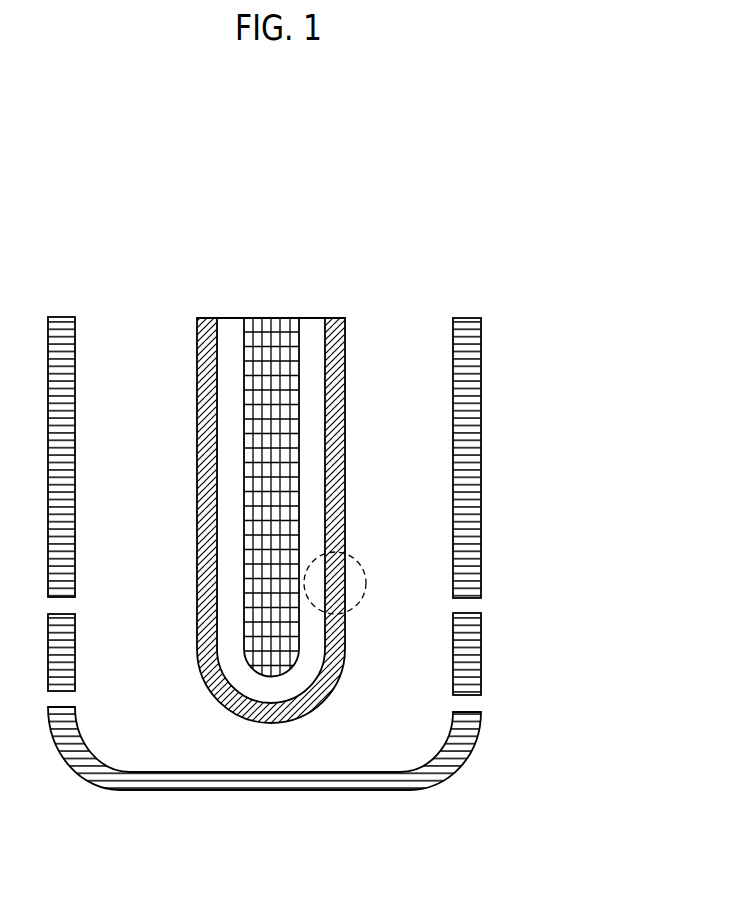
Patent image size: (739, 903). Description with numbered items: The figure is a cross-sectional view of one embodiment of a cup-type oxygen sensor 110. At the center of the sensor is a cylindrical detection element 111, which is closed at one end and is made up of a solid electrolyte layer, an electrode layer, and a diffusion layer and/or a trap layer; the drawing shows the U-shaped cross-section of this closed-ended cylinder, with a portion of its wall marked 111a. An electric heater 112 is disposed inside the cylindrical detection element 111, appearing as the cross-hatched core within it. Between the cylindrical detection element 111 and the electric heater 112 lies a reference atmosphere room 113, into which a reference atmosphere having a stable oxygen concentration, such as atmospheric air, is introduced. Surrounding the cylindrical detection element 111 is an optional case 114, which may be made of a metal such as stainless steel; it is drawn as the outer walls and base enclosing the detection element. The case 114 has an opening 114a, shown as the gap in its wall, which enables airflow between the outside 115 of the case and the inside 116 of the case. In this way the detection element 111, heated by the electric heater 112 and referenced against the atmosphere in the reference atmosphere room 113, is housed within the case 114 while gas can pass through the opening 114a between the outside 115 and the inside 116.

The cup-type oxygen sensor 110 is at (329, 198).
The cylindrical detection element 111 is at (343, 387).
The bent portion of inner tubular member 111a is at (365, 567).
The electric heater 112 is at (257, 320).
The reference atmosphere room 113 is at (330, 320).
The case 114 is at (462, 383).
The opening 114a is at (460, 605).
The outside of the case 115 is at (595, 651).
The inside of the case 116 is at (432, 653).